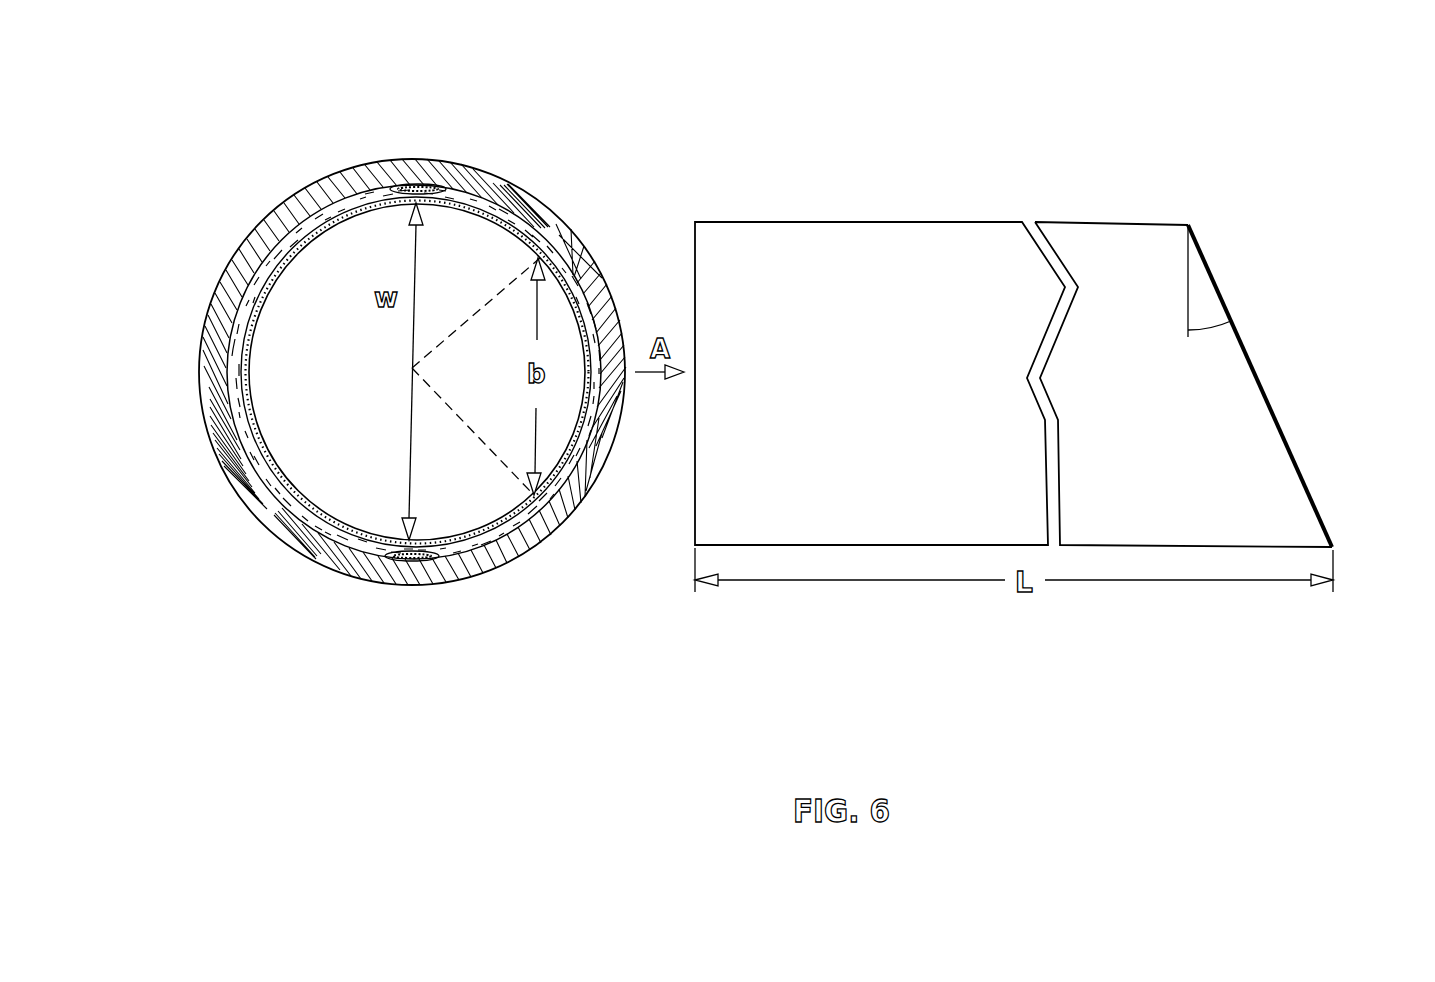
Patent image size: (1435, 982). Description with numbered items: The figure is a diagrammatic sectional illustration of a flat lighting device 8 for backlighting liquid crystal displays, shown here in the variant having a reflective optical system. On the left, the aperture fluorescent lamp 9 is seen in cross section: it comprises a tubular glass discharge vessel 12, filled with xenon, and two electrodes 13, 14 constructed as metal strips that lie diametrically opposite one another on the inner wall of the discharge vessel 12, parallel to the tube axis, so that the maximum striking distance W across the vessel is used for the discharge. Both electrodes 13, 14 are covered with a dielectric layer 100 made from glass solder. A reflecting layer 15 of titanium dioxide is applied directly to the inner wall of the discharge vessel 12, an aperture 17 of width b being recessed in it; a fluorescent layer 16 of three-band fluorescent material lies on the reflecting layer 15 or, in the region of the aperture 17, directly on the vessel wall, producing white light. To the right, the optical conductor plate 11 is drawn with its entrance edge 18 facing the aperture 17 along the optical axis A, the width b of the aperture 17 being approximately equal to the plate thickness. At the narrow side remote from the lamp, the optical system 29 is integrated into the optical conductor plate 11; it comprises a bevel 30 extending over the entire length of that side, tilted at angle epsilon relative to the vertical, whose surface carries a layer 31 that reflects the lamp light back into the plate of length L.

The flat lighting device 8 is at (1046, 163).
The aperture fluorescent lamp 9 is at (540, 165).
The optical conductor plate 11 is at (935, 200).
The tubular discharge vessel 12 is at (503, 568).
The electrode 13 is at (416, 225).
The electrode 14 is at (409, 518).
The reflecting layer 15 is at (288, 503).
The fluorescent layer 16 is at (318, 200).
The aperture 17 is at (626, 245).
The entrance edge 18 is at (657, 504).
The optical system 29 is at (1335, 222).
The bevel 30 is at (1213, 384).
The reflecting layer 31 is at (1304, 483).
The dielectric layer 100 is at (393, 186).